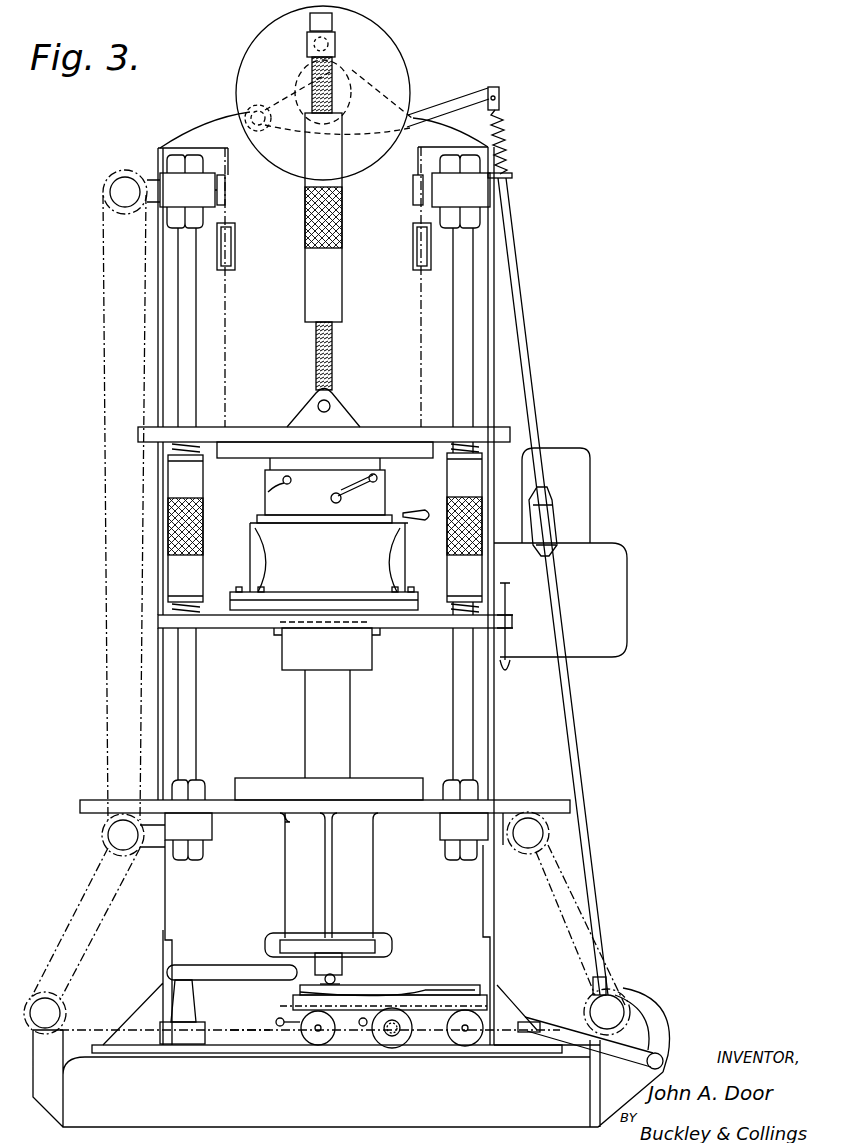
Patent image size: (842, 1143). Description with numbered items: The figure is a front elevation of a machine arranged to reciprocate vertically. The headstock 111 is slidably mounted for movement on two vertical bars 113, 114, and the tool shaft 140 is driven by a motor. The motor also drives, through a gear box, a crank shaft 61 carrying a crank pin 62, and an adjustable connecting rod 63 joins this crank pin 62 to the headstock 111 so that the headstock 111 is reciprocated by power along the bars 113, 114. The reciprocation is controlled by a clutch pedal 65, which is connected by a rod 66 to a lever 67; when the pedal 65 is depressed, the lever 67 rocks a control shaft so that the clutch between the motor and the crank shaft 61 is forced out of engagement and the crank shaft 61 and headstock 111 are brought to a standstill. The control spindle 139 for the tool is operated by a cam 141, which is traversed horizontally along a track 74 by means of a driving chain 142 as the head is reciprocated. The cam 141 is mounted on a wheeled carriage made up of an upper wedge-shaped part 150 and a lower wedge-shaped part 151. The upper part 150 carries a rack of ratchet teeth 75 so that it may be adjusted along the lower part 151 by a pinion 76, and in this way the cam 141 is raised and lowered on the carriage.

The crank pin 62 is at (335, 40).
The crank shaft 61 is at (350, 72).
The lever 67 is at (440, 106).
The adjustable connecting rod 63 is at (337, 300).
The vertical bar 113 is at (185, 312).
The vertical bar 114 is at (460, 307).
The headstock 111 is at (500, 428).
The tool shaft 140 is at (317, 728).
The rod 66 is at (576, 738).
The driving chain 142 is at (535, 872).
The control spindle 139 is at (345, 963).
The cam 141 is at (440, 990).
The track 74 is at (233, 1053).
The upper wedge-shaped part 150 is at (352, 1012).
The rack of ratchet teeth 75 is at (362, 1035).
The pinion 76 is at (392, 1045).
The lower wedge-shaped part 151 is at (440, 1032).
The clutch pedal 65 is at (575, 1050).